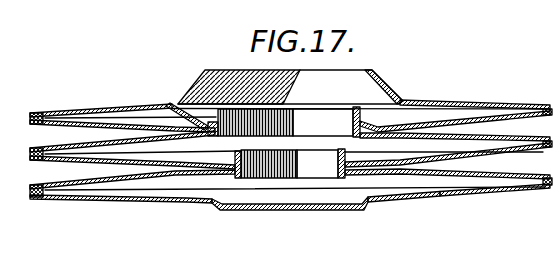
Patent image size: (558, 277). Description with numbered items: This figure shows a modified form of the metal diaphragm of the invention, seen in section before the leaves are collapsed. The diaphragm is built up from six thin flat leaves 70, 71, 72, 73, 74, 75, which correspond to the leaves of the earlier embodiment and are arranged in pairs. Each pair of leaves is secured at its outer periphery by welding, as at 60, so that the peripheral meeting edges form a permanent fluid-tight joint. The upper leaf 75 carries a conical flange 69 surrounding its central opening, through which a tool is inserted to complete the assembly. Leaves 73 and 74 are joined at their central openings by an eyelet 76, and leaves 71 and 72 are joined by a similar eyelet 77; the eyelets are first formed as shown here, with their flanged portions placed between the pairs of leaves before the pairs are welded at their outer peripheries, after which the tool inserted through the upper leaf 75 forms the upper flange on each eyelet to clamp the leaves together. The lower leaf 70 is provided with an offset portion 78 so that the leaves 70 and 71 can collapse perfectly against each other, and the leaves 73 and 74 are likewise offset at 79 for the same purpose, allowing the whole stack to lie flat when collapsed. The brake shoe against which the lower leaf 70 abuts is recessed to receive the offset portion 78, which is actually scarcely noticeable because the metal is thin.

The welded peripheral edges 60 is at (43, 113).
The conical flange 69 is at (390, 82).
The lower leaf 70 is at (417, 200).
The leaf 71 is at (488, 185).
The leaf 72 is at (482, 158).
The leaf 73 is at (482, 138).
The leaf 74 is at (487, 115).
The upper leaf 75 is at (443, 100).
The eyelet 76 is at (283, 120).
The eyelet 77 is at (293, 160).
The offset portion 78 is at (333, 210).
The offset 79 is at (170, 105).